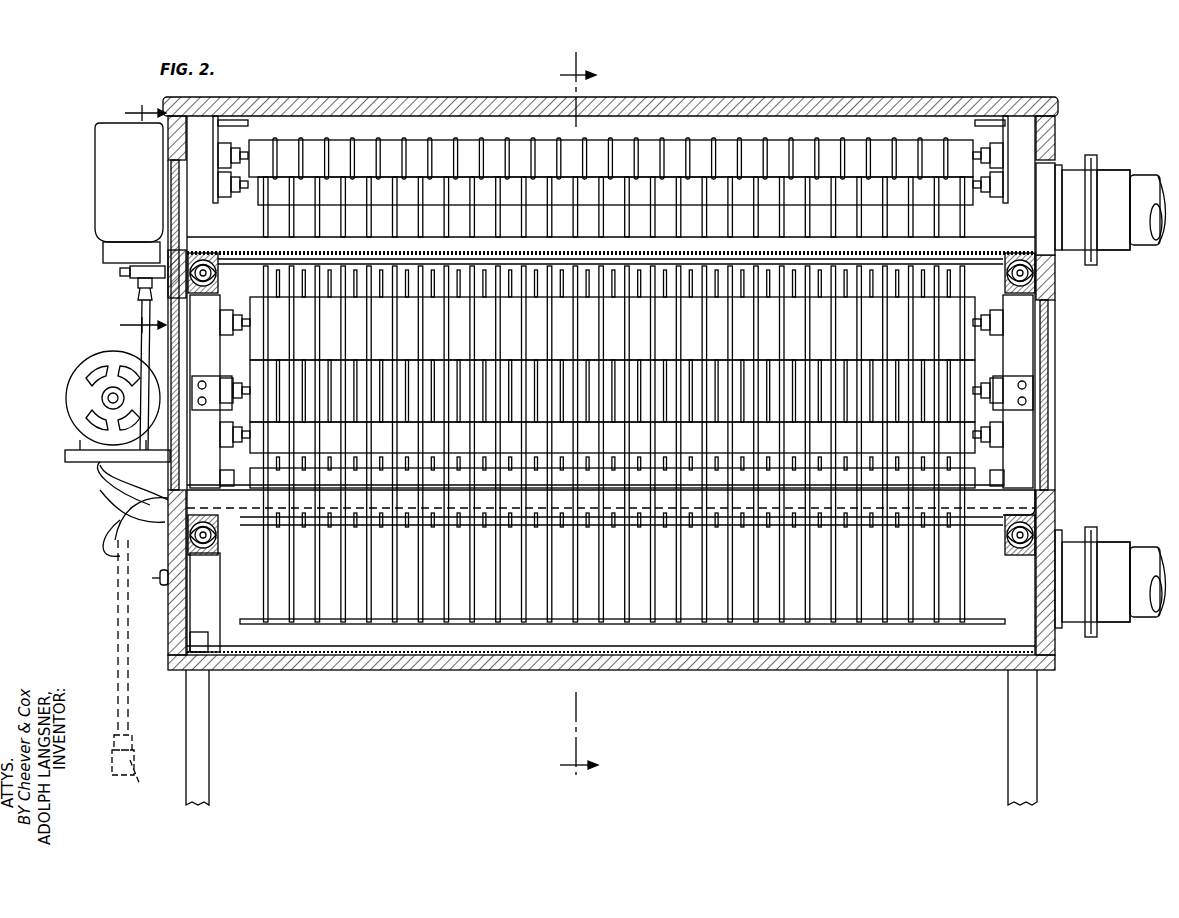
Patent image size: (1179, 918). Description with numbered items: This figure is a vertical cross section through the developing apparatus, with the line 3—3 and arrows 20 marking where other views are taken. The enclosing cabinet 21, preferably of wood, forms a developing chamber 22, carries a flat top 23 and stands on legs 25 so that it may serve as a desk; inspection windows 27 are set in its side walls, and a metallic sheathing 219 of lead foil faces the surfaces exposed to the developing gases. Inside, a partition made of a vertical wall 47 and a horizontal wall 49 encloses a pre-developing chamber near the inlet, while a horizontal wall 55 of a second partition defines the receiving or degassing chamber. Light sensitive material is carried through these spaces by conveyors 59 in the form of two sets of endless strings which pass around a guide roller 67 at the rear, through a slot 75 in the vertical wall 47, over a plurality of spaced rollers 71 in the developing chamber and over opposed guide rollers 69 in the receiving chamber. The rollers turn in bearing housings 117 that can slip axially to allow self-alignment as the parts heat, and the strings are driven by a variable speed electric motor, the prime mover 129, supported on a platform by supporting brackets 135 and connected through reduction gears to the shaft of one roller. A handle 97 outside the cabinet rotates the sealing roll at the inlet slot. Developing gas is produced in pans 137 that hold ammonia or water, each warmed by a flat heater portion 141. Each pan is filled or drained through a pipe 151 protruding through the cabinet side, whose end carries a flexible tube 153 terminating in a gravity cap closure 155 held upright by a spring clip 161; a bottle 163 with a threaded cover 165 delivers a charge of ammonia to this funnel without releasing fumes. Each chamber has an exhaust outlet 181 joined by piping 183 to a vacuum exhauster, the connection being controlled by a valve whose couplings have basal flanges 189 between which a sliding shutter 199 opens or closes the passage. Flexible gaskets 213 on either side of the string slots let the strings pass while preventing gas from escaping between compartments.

The section line 3- 3 is at (579, 417).
The viewing direction arrows 20 is at (136, 210).
The enclosing cabinet 21 is at (805, 670).
The developing chamber 22 is at (672, 650).
The flat top 23 is at (325, 97).
The legs 25 is at (212, 705).
The inspection windows 27 is at (182, 463).
The vertical wall 47 is at (372, 668).
The horizontal wall 49 is at (330, 528).
The horizontal wall 55 is at (888, 245).
The conveyors 59 is at (600, 140).
The guide roller 67 is at (632, 440).
The guide rollers 69 is at (392, 195).
The rollers 71 is at (258, 352).
The slot 75 is at (262, 625).
The handle 97 is at (152, 578).
The bearing housing 117 is at (224, 325).
The prime mover 129 is at (82, 378).
The supporting brackets 135 is at (100, 470).
The pans 137 is at (1058, 503).
The heater portion 141 is at (207, 602).
The pipe 151 is at (165, 525).
The flexible tube 153 is at (112, 497).
The gravity cap closure 155 is at (132, 285).
The spring clip 161 is at (120, 271).
The bottle 163 is at (100, 160).
The cover 165 is at (108, 250).
The exhaust outlet 181 is at (1045, 220).
The piping 183 is at (1150, 180).
The basal flanges 189 is at (1125, 248).
The shutter 199 is at (1088, 265).
The flexible gaskets 213 is at (760, 275).
The metallic sheathing 219 is at (815, 251).